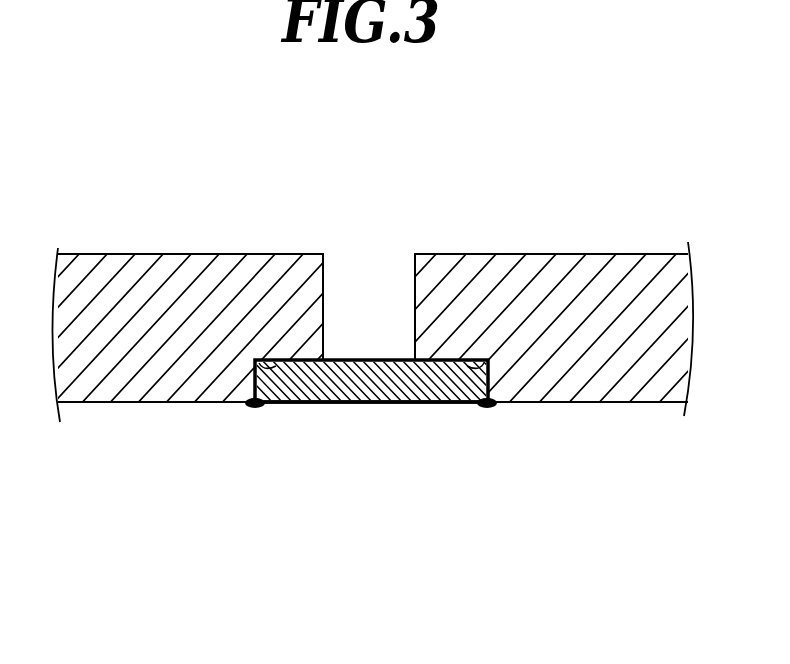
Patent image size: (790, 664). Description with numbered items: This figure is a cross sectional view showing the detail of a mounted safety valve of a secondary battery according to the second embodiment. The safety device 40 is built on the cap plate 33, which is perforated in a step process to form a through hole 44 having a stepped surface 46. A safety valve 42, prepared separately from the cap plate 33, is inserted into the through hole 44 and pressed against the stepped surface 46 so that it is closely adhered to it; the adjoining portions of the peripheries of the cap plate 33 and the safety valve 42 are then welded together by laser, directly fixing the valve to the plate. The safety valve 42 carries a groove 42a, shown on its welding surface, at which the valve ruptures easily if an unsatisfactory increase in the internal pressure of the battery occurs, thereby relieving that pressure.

The cap plate 33 is at (101, 266).
The through hole 44 is at (326, 296).
The safety valve 42 is at (302, 403).
The groove 42a is at (370, 403).
The stepped surface 46 is at (254, 400).
The safety device 40 is at (408, 473).